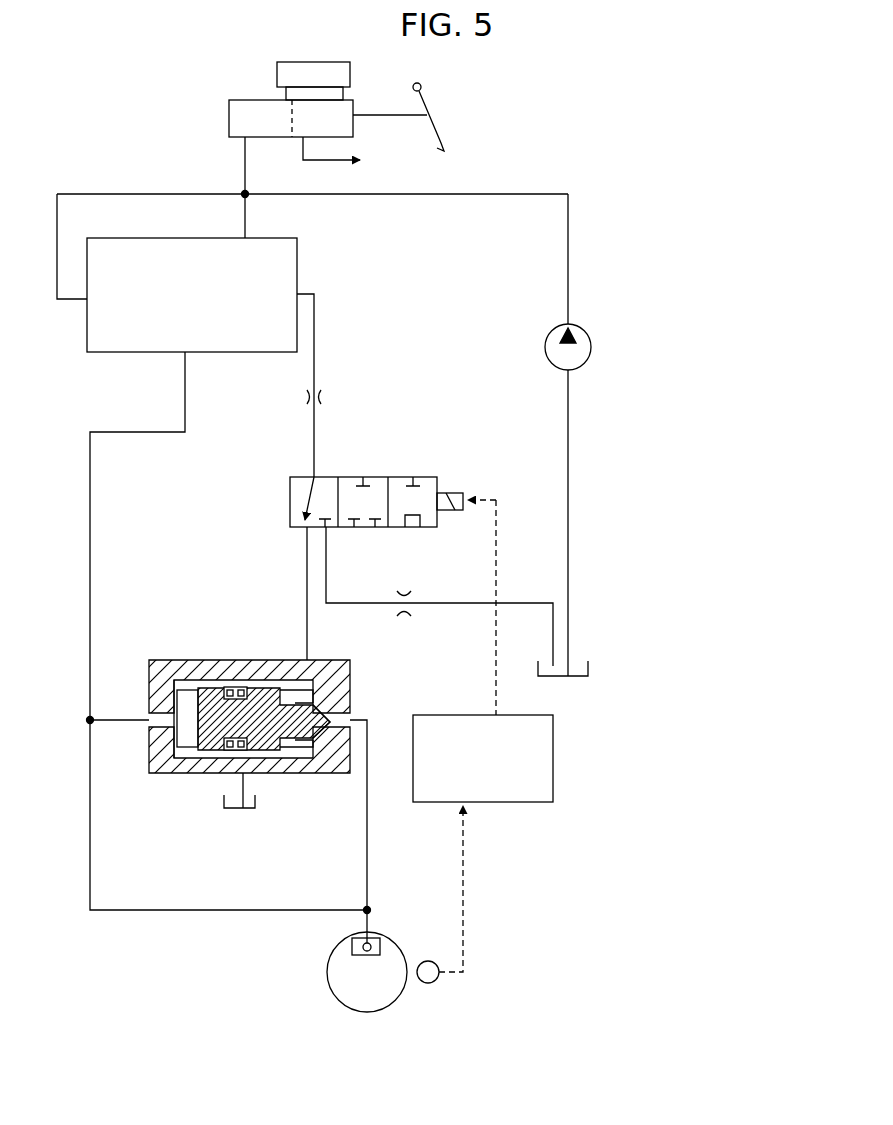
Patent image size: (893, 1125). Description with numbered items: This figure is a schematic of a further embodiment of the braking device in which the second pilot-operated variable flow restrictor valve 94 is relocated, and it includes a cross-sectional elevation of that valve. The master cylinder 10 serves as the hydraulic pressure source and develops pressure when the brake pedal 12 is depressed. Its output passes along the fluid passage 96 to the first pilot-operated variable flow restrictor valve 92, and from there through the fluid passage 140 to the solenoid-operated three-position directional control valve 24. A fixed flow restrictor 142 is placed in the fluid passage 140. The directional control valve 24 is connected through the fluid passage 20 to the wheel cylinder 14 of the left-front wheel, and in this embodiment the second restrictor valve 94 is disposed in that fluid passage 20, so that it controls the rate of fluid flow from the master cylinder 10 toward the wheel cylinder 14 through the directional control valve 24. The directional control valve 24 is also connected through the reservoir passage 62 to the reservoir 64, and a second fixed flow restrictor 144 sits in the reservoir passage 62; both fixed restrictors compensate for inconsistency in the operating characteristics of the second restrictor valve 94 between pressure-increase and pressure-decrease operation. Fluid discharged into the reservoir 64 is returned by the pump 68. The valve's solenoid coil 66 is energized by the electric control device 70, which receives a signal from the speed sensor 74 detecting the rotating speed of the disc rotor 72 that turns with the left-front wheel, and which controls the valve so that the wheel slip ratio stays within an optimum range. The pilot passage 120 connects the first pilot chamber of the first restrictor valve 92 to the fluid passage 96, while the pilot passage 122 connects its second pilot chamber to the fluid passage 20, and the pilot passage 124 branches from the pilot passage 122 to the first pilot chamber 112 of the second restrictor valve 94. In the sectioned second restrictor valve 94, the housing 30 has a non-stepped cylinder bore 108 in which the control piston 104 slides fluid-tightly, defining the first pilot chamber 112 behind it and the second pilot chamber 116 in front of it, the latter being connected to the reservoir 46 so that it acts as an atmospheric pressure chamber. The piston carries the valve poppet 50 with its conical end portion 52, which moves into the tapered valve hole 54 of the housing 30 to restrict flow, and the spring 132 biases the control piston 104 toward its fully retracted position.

The master cylinder 10 is at (232, 118).
The brake pedal 12 is at (432, 128).
The wheel cylinder 14 is at (350, 947).
The fluid passage 20 is at (302, 612).
The three-position directional control valve 24 is at (386, 462).
The housing 30 is at (250, 337).
The reservoir 46 is at (248, 810).
The valve poppet 50 is at (292, 773).
The conical end portion 52 is at (300, 775).
The tapered valve hole 54 is at (325, 710).
The reservoir passage 62 is at (462, 605).
The reservoir 64 is at (575, 667).
The solenoid coil 66 is at (457, 492).
The pump 68 is at (545, 348).
The electric control device 70 is at (545, 790).
The disc rotor 72 is at (340, 983).
The speed sensor 74 is at (432, 985).
The first pilot-operated variable flow restrictor valve 92 is at (312, 262).
The second pilot-operated variable flow restrictor valve 94 is at (362, 682).
The fluid passage 96 is at (245, 213).
The control piston 104 is at (200, 773).
The cylinder bore 108 is at (198, 658).
The first pilot chamber 112 is at (183, 742).
The second pilot chamber 116 is at (236, 686).
The pilot passage 120 is at (137, 194).
The pilot passage 122 is at (90, 550).
The pilot passage 124 is at (120, 719).
The spring 132 is at (230, 775).
The fluid passage 140 is at (316, 352).
The fixed flow restrictor 142 is at (330, 397).
The fixed flow restrictor 144 is at (401, 592).